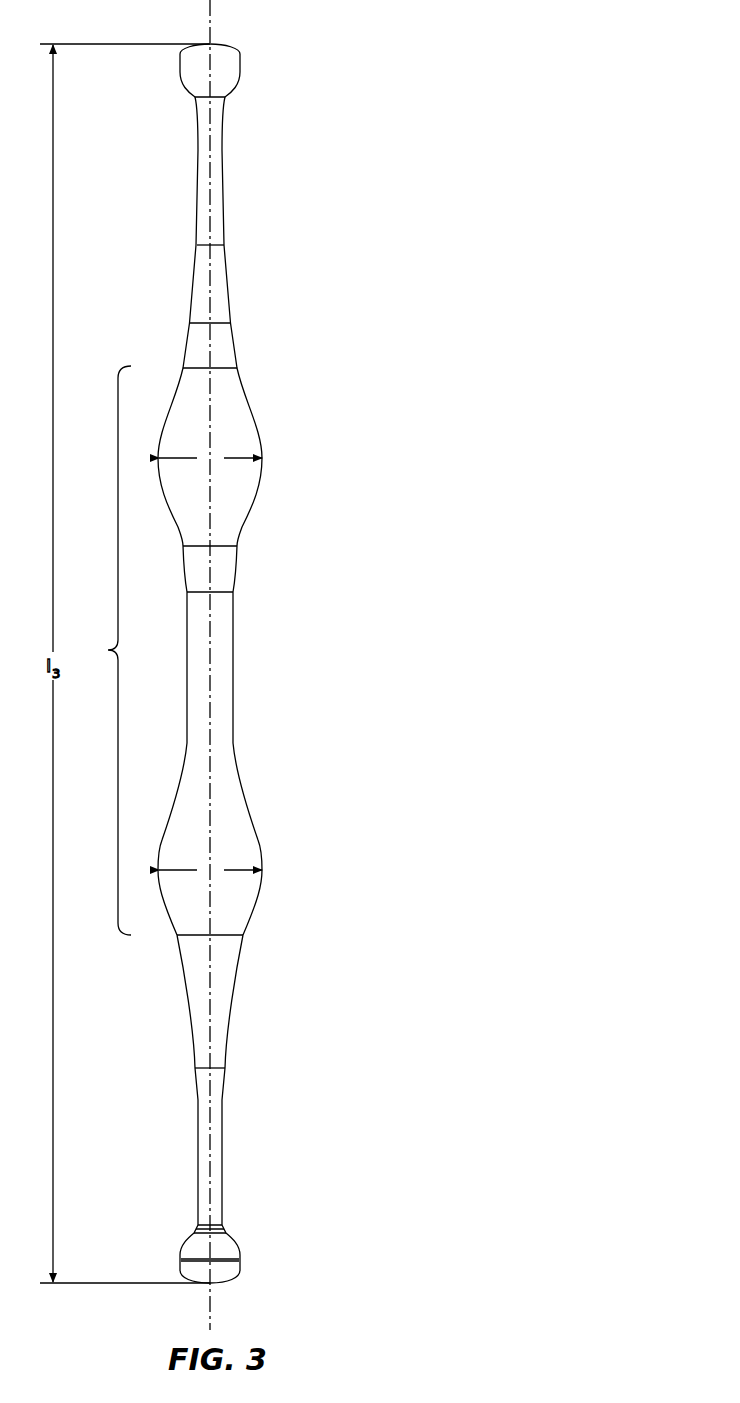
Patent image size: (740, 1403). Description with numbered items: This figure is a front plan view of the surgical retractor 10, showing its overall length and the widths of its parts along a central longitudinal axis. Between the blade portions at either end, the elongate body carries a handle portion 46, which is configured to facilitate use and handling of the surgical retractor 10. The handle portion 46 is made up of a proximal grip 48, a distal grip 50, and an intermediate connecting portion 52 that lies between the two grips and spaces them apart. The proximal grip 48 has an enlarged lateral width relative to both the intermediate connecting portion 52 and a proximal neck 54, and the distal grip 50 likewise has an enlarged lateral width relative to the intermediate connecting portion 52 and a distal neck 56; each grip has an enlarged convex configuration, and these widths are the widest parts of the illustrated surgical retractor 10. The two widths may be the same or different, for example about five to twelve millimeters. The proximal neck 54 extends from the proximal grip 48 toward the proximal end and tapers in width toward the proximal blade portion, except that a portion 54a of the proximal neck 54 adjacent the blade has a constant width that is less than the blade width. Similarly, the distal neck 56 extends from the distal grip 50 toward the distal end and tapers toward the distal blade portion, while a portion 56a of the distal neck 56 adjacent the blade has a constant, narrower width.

The surgical retractor 10 is at (396, 40).
The handle portion 46 is at (105, 650).
The proximal grip 48 is at (263, 458).
The distal grip 50 is at (263, 870).
The intermediate connecting portion 52 is at (233, 685).
The proximal neck 54 is at (218, 225).
The portion of proximal neck 54a is at (224, 145).
The distal neck 56 is at (203, 1086).
The portion of distal neck 56a is at (197, 1160).